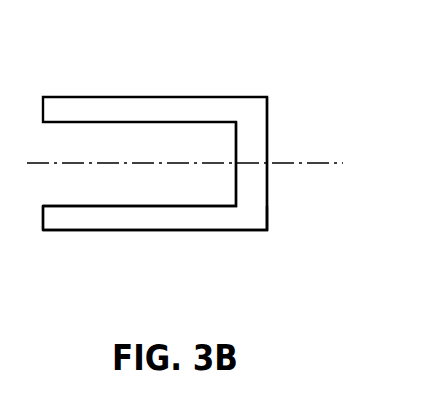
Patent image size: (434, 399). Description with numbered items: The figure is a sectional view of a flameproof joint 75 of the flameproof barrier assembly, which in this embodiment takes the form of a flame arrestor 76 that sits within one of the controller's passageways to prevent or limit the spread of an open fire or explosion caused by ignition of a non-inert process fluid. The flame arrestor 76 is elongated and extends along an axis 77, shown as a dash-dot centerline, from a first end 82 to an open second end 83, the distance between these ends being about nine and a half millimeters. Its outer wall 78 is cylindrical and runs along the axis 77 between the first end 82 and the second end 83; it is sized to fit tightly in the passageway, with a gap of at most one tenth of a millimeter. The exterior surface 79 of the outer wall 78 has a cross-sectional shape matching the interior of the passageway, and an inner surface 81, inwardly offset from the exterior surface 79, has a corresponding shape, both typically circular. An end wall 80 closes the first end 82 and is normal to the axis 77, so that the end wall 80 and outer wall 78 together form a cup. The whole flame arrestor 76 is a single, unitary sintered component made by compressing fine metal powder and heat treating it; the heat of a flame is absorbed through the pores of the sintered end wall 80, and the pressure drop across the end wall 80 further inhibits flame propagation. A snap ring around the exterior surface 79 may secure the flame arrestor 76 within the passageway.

The flameproof joint 75 is at (190, 155).
The flame arrestor 76 is at (247, 60).
The axis 77 is at (332, 163).
The outer wall 78 is at (118, 230).
The exterior surface 79 is at (189, 230).
The end wall 80 is at (268, 205).
The inner surface 81 is at (72, 206).
The first end 82 is at (267, 230).
The second end 83 is at (46, 230).